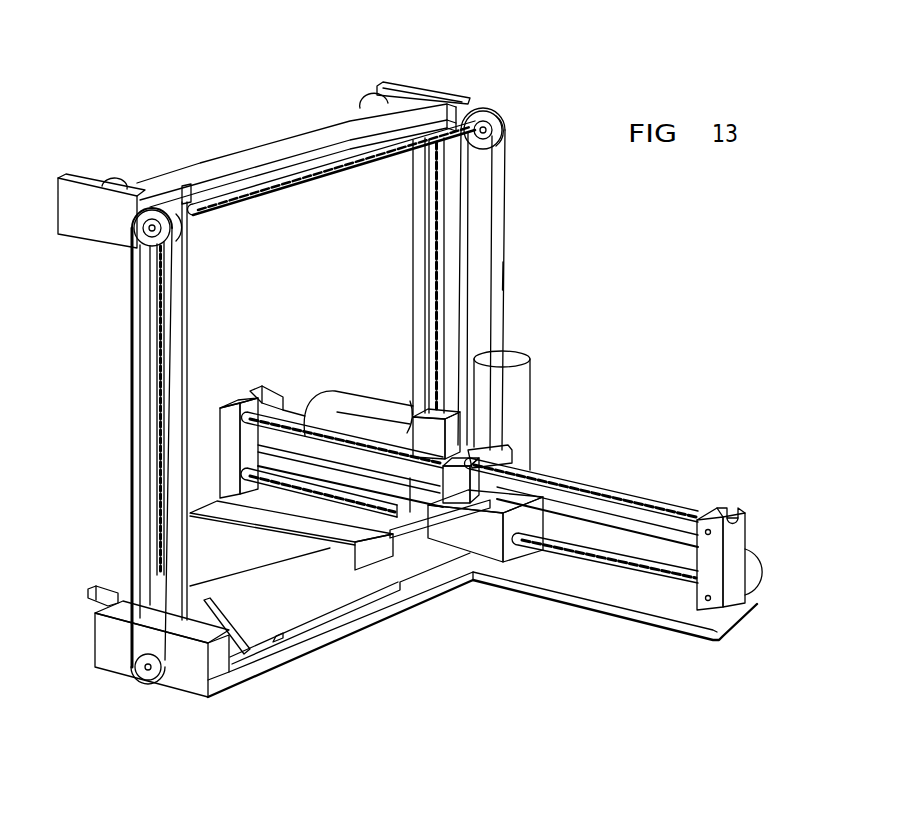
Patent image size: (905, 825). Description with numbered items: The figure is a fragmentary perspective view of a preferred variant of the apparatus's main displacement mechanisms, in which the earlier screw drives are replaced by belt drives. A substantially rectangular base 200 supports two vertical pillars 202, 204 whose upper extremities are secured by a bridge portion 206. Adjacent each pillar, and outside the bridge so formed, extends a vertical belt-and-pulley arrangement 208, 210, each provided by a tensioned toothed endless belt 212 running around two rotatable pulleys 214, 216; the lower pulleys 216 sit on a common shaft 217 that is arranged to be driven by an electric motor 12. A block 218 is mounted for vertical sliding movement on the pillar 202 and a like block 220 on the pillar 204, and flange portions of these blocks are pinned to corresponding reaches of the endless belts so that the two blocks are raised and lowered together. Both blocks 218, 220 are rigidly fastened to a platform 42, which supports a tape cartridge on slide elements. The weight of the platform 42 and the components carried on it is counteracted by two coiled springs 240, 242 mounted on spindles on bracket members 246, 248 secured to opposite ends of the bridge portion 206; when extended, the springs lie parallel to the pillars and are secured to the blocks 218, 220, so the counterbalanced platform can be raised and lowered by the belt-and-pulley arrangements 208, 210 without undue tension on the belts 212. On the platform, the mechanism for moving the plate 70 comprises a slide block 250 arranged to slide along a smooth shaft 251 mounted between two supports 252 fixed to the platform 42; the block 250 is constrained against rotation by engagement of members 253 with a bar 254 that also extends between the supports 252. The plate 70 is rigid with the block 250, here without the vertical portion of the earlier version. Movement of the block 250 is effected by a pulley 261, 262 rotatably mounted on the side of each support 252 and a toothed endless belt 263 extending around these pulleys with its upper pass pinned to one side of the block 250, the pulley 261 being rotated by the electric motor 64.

The electric motor 12 is at (520, 380).
The platform 42 is at (293, 600).
The electric motor 64 is at (347, 403).
The plate 70 is at (303, 526).
The base 200 is at (420, 598).
The pillar 202 is at (444, 254).
The pillar 204 is at (158, 372).
The bridge portion 206 is at (287, 147).
The belt-and-pulley arrangement 208 is at (512, 268).
The belt-and-pulley arrangement 210 is at (136, 428).
The toothed endless belt 212 is at (181, 306).
The pulley 214 is at (150, 233).
The lower pulley 216 is at (152, 681).
The common shaft 217 is at (140, 665).
The block 218 is at (415, 428).
The block 220 is at (127, 552).
The coiled spring 240 is at (420, 200).
The coiled spring 242 is at (139, 481).
The bracket member 246 is at (408, 85).
The bracket member 248 is at (88, 178).
The slide block 250 is at (494, 548).
The smooth shaft 251 is at (593, 552).
The support 252 is at (222, 448).
The member 253 is at (458, 490).
The bar 254 is at (594, 482).
The pulley 261 is at (262, 458).
The pulley 262 is at (758, 549).
The toothed endless belt 263 is at (638, 518).